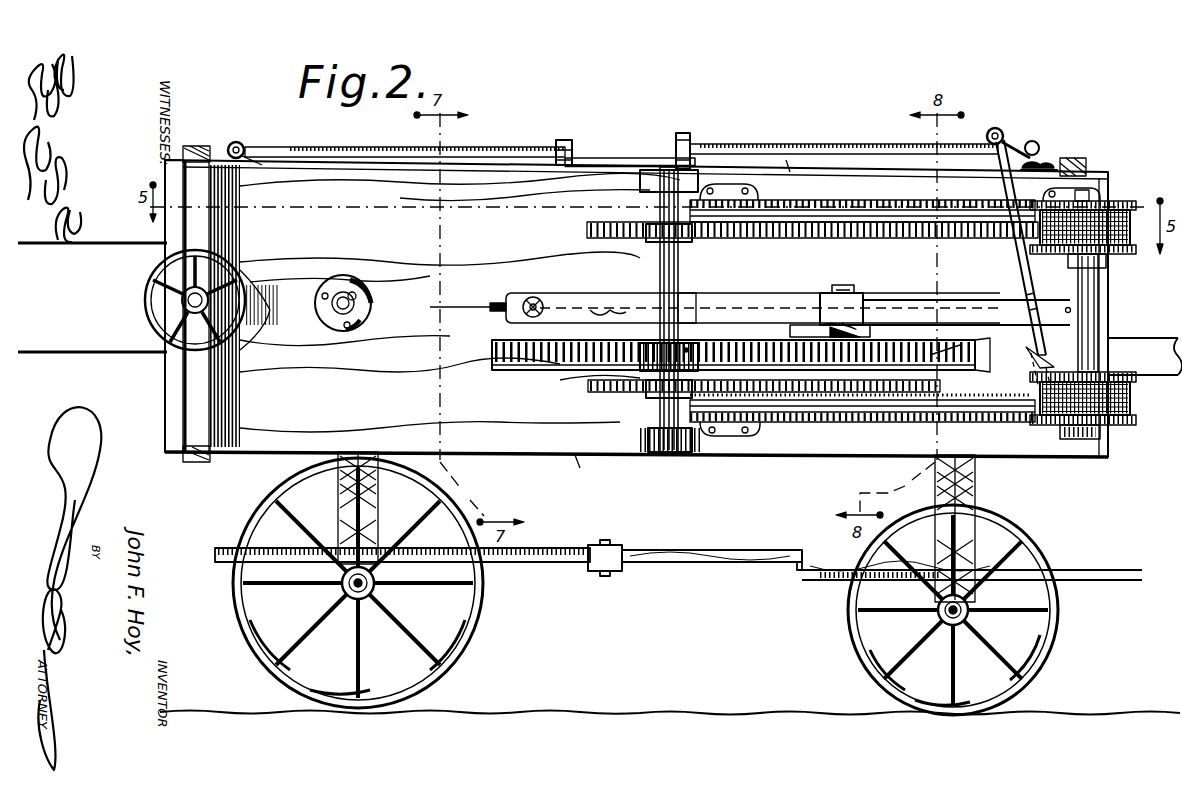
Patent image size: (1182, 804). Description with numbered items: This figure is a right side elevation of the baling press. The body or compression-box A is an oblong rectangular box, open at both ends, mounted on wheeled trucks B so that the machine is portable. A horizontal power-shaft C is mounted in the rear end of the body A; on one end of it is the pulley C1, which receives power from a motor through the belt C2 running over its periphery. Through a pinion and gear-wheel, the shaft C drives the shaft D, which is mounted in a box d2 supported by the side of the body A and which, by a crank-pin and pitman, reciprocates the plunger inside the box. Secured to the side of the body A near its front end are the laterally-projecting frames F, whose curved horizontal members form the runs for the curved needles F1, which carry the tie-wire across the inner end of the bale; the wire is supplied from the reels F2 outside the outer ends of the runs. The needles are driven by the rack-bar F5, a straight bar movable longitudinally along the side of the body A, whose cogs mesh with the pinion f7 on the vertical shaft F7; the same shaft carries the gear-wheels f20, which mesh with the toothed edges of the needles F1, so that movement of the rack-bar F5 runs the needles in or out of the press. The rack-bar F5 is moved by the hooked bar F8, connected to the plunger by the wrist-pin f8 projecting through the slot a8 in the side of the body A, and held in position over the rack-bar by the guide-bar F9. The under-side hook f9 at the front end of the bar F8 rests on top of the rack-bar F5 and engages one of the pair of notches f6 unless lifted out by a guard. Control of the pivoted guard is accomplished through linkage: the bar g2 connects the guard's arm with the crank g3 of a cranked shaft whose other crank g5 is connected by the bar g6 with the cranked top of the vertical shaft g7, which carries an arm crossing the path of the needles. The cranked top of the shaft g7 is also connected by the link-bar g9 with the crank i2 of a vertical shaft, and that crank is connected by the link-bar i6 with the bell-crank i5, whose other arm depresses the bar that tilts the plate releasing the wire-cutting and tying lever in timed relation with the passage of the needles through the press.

The body or compression-box A is at (636, 315).
The wheeled trucks B is at (478, 616).
The power-shaft C is at (183, 300).
The pulley C1 is at (150, 282).
The belt C2 is at (66, 352).
The shaft D is at (320, 298).
The box d2 is at (356, 290).
The slot a8 is at (492, 306).
The crank i2 is at (575, 165).
The bell-crank i5 is at (250, 160).
The link-bar i6 is at (362, 150).
The bar g2 is at (1020, 278).
The crank g3 is at (1008, 150).
The crank g5 is at (1040, 160).
The bar g6 is at (852, 146).
The vertical shaft g7 is at (682, 148).
The link-bar g9 is at (606, 158).
The laterally-projecting frames F is at (850, 210).
The curved needles F1 is at (898, 210).
The reels F2 is at (1112, 205).
The rack-bar F5 is at (556, 366).
The shaft F7 is at (690, 300).
The hooked bar F8 is at (612, 303).
The guide-bar F9 is at (902, 302).
The notches f6 is at (942, 357).
The pinion f7 is at (686, 350).
The wrist-pin f8 is at (534, 298).
The hook f9 is at (860, 337).
The gear-wheels f20 is at (592, 229).